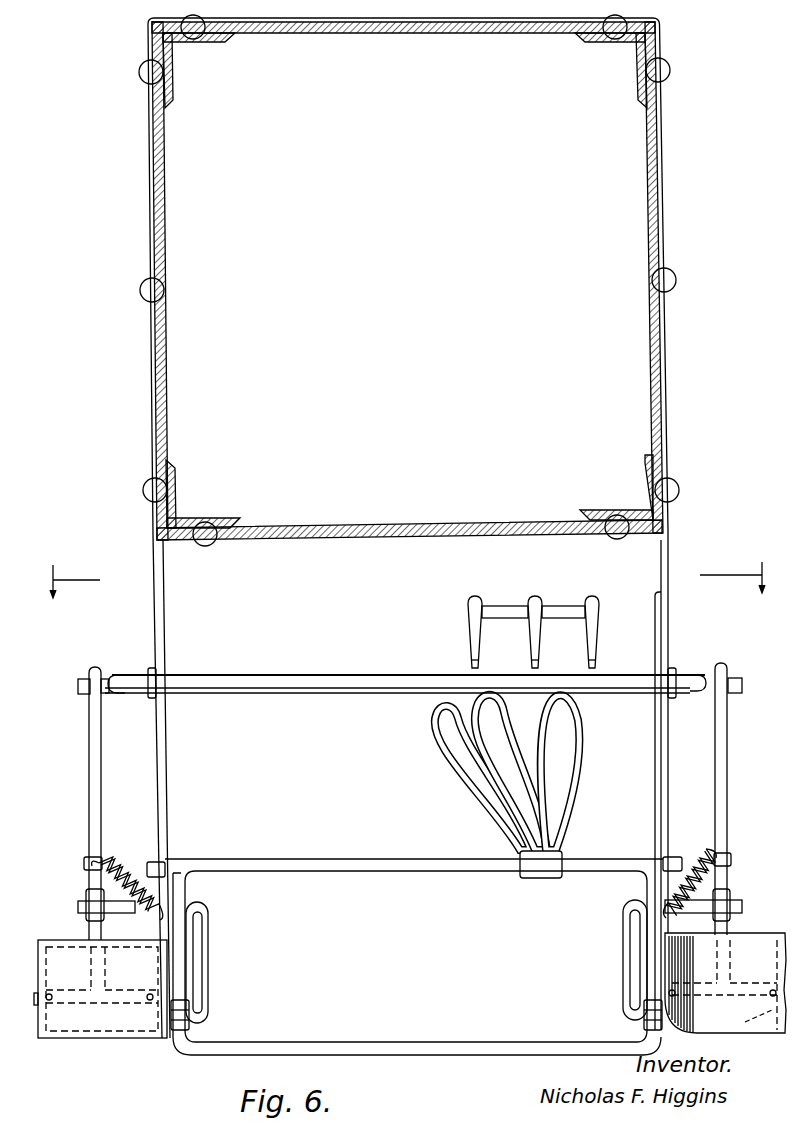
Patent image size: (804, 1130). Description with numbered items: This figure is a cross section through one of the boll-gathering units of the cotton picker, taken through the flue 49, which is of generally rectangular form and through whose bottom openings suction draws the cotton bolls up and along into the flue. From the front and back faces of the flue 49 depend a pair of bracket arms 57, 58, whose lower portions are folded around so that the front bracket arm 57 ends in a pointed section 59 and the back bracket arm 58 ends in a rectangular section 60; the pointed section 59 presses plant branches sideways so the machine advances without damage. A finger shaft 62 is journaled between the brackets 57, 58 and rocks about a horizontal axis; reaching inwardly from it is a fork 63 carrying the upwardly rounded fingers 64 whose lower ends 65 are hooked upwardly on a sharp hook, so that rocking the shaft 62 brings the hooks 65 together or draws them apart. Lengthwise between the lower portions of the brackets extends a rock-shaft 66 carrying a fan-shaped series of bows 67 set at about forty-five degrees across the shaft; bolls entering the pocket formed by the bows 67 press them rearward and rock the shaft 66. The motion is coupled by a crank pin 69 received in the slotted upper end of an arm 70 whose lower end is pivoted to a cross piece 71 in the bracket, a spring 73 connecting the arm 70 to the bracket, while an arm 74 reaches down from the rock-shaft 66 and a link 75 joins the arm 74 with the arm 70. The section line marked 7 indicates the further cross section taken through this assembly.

The section line 7- 7 is at (404, 580).
The flue 49 is at (164, 405).
The front bracket arm 57 is at (160, 637).
The back bracket arm 58 is at (666, 632).
The pointed section 59 is at (80, 1028).
The rectangular section 60 is at (756, 945).
The finger shaft 62 is at (372, 678).
The fork 63 is at (539, 670).
The fingers 64 is at (535, 623).
The hooked lower ends 65 is at (478, 670).
The rock-shaft 66 is at (348, 862).
The bows 67 is at (477, 748).
The crank pin 69 is at (78, 688).
The arm 70 is at (90, 793).
The cross piece 71 is at (748, 1022).
The spring 73 is at (125, 868).
The arm 74 is at (178, 975).
The link 75 is at (204, 995).